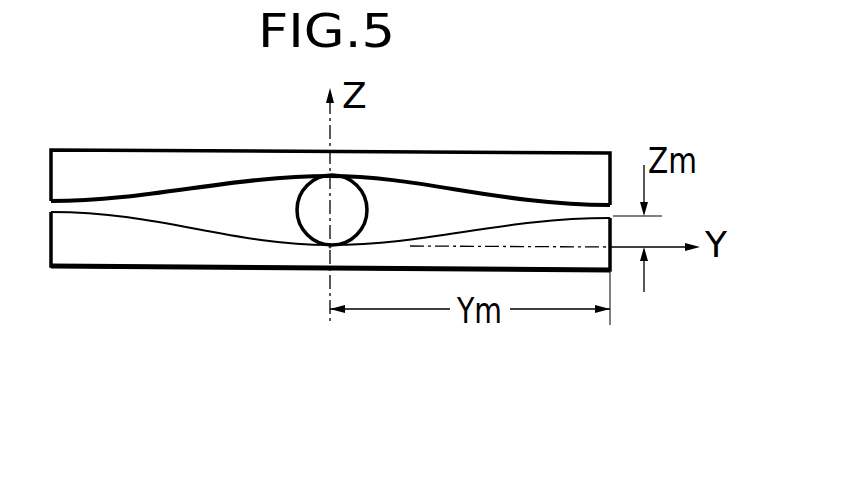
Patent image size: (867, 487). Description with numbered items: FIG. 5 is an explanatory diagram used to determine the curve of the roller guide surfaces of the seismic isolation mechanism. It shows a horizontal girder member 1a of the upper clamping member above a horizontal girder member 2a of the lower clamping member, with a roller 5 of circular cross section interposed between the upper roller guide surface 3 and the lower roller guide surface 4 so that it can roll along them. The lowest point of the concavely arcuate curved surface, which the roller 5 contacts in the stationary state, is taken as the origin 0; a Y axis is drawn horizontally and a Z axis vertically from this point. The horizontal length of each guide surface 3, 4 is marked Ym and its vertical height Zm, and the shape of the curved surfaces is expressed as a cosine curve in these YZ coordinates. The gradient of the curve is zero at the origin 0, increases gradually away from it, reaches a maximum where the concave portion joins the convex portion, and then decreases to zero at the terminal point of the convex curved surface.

The horizontal girder member 1a is at (500, 162).
The horizontal girder member 2a is at (132, 268).
The upper roller guide surface 3 is at (387, 183).
The lower roller guide surface 4 is at (237, 236).
The roller 5 is at (361, 220).
The origin point 0 is at (320, 247).